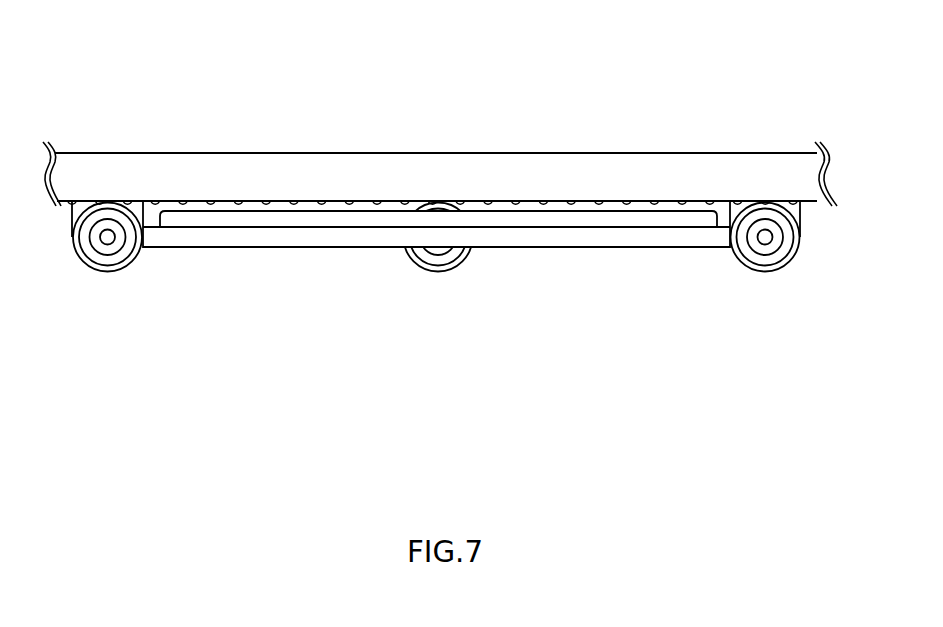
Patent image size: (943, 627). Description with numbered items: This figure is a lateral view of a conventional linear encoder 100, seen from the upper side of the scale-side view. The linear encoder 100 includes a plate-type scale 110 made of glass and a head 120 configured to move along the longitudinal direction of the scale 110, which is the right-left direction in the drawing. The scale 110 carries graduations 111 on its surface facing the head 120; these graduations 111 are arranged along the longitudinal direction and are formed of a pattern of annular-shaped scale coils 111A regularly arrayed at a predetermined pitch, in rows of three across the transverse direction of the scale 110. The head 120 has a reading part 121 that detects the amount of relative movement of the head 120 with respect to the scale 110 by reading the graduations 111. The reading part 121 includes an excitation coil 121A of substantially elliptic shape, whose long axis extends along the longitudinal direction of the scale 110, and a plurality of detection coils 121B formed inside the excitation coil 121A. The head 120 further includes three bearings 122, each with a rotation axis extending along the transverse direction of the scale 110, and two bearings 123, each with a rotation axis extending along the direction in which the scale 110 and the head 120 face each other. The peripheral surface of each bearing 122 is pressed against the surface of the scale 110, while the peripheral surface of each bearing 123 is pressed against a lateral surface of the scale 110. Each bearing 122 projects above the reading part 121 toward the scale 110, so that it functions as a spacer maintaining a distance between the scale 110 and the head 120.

The linear encoder 100 is at (614, 88).
The scale 110 is at (487, 163).
The scale coils 111A is at (295, 201).
The graduations 111 is at (432, 155).
The head 120 is at (603, 248).
The excitation coil 121A is at (438, 256).
The detection coils 121B is at (232, 220).
The reading part 121 is at (438, 256).
The bearings 122 is at (116, 272).
The bearings 123 is at (72, 210).